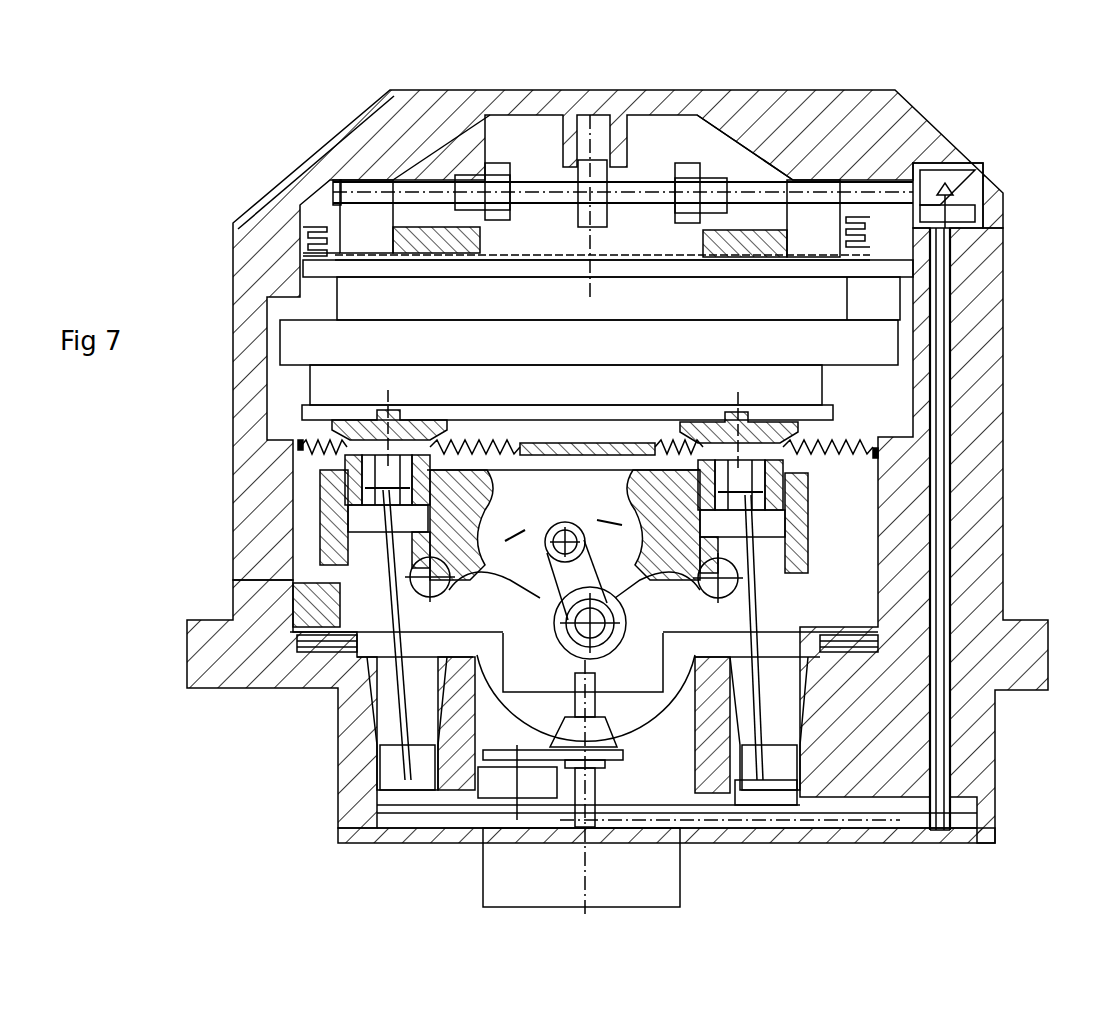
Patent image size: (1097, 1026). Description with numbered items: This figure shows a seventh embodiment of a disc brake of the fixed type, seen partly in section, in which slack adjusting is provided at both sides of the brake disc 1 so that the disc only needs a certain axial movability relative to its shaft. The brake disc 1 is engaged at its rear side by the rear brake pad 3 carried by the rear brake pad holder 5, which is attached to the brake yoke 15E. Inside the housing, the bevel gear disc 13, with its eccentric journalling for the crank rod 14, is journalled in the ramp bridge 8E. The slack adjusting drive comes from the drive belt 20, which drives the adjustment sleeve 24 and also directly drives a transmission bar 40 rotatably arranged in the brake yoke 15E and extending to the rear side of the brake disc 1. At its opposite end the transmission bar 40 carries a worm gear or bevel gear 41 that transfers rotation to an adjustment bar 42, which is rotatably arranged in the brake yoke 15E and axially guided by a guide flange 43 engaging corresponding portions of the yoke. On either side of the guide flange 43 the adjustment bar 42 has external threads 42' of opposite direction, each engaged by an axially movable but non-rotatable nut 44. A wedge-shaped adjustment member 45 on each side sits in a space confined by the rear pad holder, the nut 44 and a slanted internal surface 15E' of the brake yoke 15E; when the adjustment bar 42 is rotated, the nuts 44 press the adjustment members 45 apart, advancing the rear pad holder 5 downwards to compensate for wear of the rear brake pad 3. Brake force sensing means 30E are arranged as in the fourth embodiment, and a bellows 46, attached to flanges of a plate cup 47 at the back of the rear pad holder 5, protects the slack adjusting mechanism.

The brake disc 1 is at (877, 352).
The rear brake pad 3 is at (830, 302).
The rear brake pad holder 5 is at (867, 270).
The ramp bridge 8E is at (307, 605).
The bevel gear disc 13 is at (633, 708).
The crank rod 14 is at (567, 577).
The brake yoke 15E is at (631, 535).
The slanted internal surface 15E' is at (618, 313).
The drive belt 20 is at (863, 813).
The adjustment sleeve 24 is at (795, 810).
The brake force sensing means 30E is at (877, 643).
The transmission bar 40 is at (943, 552).
The worm gear or bevel gear 41 is at (953, 176).
The adjustment bar 42 is at (658, 175).
The external threads 42' is at (590, 228).
The guide flange 43 is at (590, 175).
The nut 44 is at (497, 165).
The wedge-shaped adjustment member 45 is at (450, 150).
The bellows 46 is at (315, 225).
The plate cup 47 is at (330, 255).